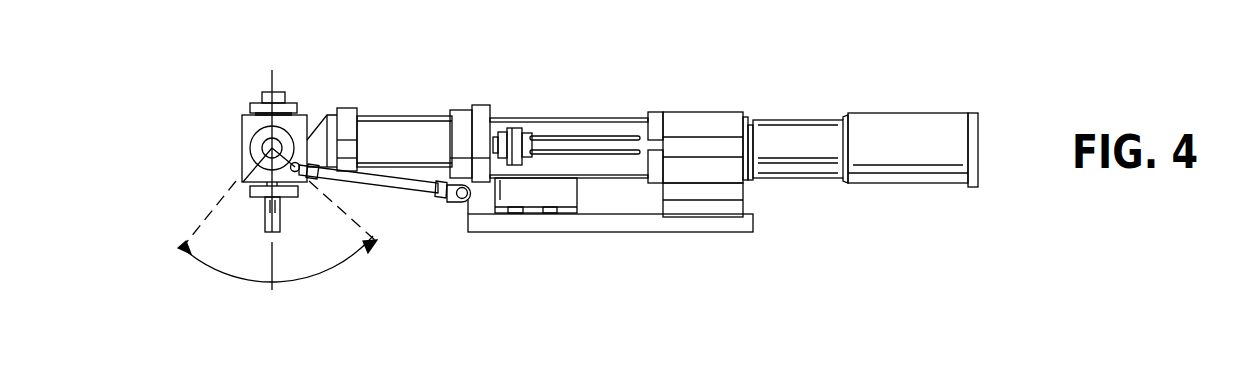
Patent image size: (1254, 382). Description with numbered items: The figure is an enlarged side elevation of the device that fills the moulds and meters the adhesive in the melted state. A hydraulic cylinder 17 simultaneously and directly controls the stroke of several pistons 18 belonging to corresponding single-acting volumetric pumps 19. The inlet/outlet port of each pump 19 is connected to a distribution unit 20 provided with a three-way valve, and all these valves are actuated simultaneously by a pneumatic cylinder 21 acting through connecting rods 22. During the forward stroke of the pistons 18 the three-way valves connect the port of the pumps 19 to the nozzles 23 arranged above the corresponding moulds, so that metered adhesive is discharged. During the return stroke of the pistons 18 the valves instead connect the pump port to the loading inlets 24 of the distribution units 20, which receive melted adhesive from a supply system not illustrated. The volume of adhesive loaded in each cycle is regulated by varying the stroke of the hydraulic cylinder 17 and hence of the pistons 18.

The hydraulic cylinder 17 is at (907, 132).
The piston 18 is at (495, 140).
The single-acting volumetric pump 19 is at (413, 125).
The distribution unit 20 is at (250, 125).
The pneumatic cylinder 21 is at (533, 200).
The connecting rod 22 is at (403, 187).
The nozzle 23 is at (280, 213).
The loading inlet 24 is at (277, 95).